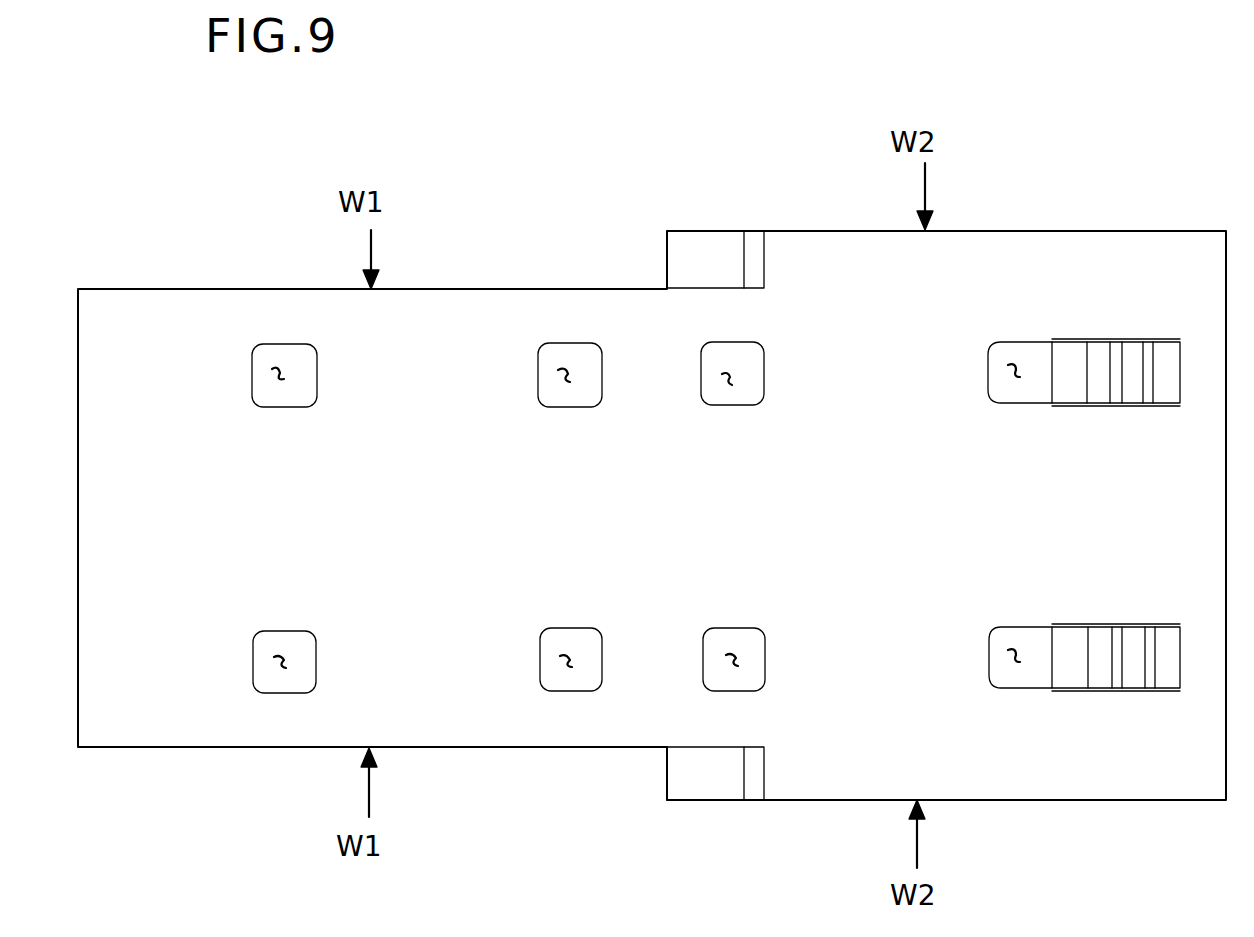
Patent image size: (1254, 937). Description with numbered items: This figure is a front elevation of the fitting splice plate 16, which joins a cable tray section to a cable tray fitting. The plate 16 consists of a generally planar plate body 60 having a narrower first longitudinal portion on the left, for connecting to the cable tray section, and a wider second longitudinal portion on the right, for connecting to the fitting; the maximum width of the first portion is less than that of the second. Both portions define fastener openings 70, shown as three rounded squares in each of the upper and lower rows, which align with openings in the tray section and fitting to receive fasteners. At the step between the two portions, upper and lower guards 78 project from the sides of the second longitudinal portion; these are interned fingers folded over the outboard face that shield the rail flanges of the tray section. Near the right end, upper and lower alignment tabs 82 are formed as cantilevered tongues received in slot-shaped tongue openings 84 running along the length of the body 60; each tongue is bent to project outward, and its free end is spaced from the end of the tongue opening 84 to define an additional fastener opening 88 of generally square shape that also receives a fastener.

The fitting splice plate 16 is at (1136, 166).
The plate body 60 is at (578, 752).
The fastener openings 70 is at (280, 373).
The upper and lower guards 78 is at (700, 241).
The alignment tabs 82 is at (1110, 388).
The tongue opening 84 is at (1078, 348).
The additional fastener opening 88 is at (1012, 385).